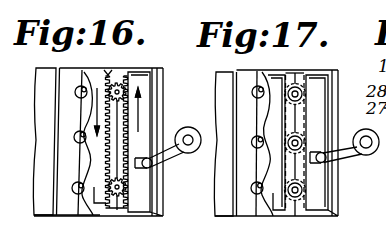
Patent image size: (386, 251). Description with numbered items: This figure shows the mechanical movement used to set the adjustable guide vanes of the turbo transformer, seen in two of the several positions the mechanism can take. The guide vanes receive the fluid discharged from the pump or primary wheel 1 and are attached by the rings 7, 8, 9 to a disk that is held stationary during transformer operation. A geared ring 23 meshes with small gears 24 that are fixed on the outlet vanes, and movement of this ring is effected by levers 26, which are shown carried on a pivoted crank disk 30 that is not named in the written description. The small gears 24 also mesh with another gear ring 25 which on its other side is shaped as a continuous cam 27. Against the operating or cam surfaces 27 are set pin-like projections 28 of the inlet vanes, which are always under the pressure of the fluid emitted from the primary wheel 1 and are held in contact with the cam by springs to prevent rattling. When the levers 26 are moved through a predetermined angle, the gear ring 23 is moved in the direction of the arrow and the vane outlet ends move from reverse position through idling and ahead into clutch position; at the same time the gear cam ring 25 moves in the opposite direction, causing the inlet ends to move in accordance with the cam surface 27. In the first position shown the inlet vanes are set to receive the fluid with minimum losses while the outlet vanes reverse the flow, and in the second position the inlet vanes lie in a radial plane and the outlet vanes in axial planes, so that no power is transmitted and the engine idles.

In FIG. 16, the pump wheel 1 is at (38, 135).
In FIG. 17, the pump wheel 1 is at (217, 88).
In FIG. 16, the ring 7 is at (72, 71).
In FIG. 17, the ring 7 is at (253, 72).
In FIG. 16, the ring 8 is at (97, 70).
In FIG. 17, the ring 8 is at (280, 72).
In FIG. 16, the ring 9 is at (128, 72).
In FIG. 17, the ring 9 is at (310, 74).
In FIG. 16, the geared ring 23 is at (138, 203).
In FIG. 17, the geared ring 23 is at (318, 203).
In FIG. 16, the gears 24 is at (117, 206).
In FIG. 17, the gears 24 is at (295, 206).
In FIG. 16, the gear ring 25 is at (97, 202).
In FIG. 17, the gear ring 25 is at (273, 205).
In FIG. 16, the levers 26 is at (166, 157).
In FIG. 17, the levers 26 is at (343, 153).
In FIG. 16, the cam surface 27 is at (80, 160).
In FIG. 17, the cam surface 27 is at (264, 99).
In FIG. 16, the pin-like projections 28 is at (77, 182).
In FIG. 17, the pin-like projections 28 is at (256, 183).
In FIG. 16, the crank disc 30 is at (186, 146).
In FIG. 17, the crank disc 30 is at (362, 149).